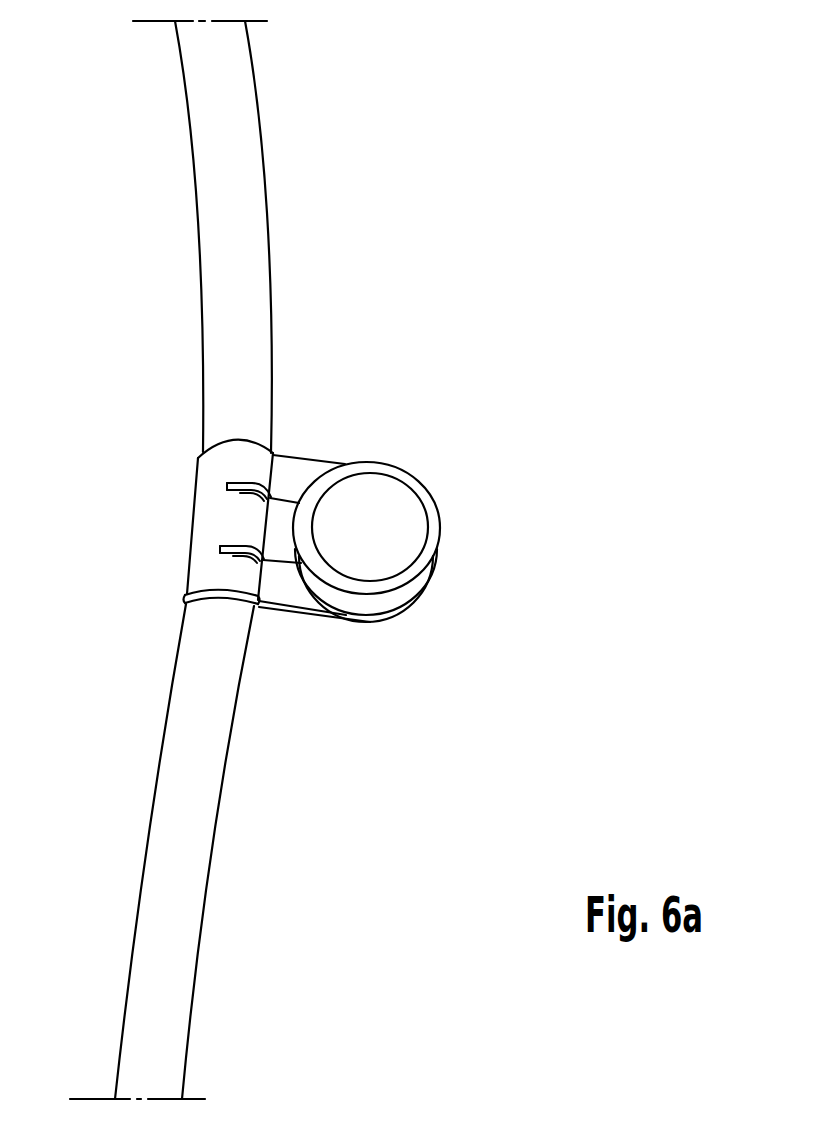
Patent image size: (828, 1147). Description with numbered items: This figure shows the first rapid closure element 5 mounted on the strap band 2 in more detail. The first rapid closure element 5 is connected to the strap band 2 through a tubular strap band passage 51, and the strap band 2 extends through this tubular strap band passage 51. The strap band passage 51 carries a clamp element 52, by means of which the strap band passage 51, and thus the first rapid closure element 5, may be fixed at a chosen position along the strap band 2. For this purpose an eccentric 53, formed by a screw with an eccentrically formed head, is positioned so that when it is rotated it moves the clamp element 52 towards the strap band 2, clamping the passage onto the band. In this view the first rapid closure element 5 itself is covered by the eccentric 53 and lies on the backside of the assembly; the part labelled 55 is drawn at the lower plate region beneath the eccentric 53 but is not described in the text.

The strap band 2 is at (197, 176).
The first rapid closure element 5 is at (309, 549).
The tubular strap band passage 51 is at (197, 573).
The clamp element 52 is at (258, 517).
The eccentric 53 is at (437, 530).
The base plate 55 is at (292, 601).